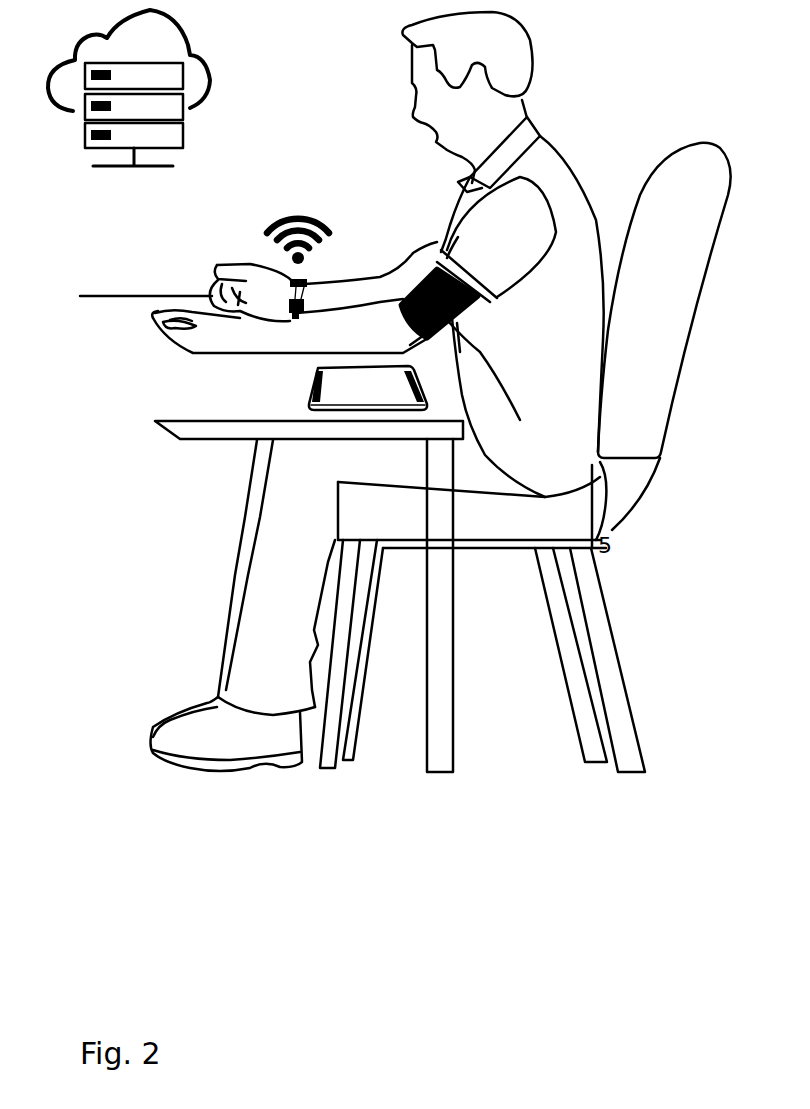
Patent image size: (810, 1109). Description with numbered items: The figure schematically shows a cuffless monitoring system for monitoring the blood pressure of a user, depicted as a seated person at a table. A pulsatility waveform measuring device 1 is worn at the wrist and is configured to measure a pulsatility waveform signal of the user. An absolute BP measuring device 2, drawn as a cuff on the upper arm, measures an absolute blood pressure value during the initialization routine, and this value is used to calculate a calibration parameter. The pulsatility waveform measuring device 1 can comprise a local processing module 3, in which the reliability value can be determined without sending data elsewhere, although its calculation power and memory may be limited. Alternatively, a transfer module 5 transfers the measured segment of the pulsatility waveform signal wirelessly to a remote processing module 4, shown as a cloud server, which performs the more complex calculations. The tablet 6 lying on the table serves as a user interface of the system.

The pulsatility waveform measuring device 1 is at (292, 282).
The absolute BP measuring device 2 is at (455, 332).
The local processing module 3 is at (290, 318).
The remote processing module 4 is at (69, 175).
The transfer module 5 is at (301, 199).
The tablet terminal 6 is at (368, 390).